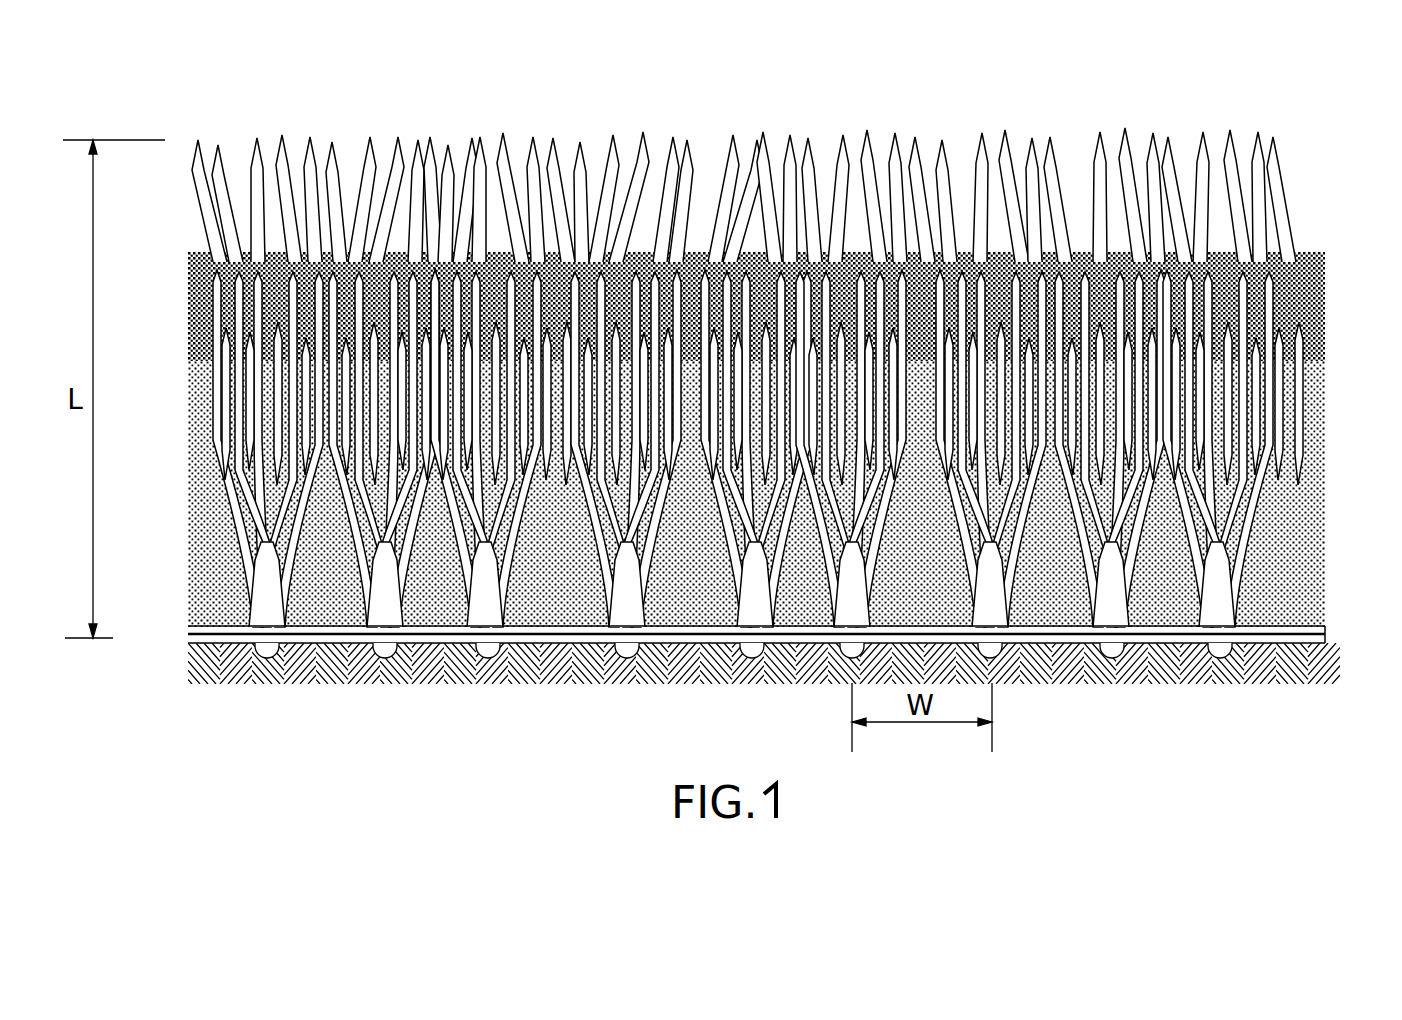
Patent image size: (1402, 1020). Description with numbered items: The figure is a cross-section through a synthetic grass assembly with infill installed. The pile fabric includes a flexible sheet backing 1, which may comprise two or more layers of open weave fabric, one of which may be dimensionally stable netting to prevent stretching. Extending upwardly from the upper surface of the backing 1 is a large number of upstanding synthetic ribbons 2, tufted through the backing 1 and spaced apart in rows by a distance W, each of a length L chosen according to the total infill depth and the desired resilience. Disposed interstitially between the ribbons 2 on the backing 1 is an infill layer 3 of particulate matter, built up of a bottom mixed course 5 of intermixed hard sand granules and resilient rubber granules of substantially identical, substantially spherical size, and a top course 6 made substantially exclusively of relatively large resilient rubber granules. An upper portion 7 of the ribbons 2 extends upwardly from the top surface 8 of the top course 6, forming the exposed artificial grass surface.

The flexible sheet backing 1 is at (1152, 648).
The upstanding synthetic ribbons 2 is at (252, 603).
The infill layer 3 is at (745, 408).
The bottom mixed course 5 is at (140, 361).
The top course 6 is at (113, 252).
The upper portion of the synthetic ribbons 7 is at (198, 188).
The top surface of the top course 8 is at (193, 250).